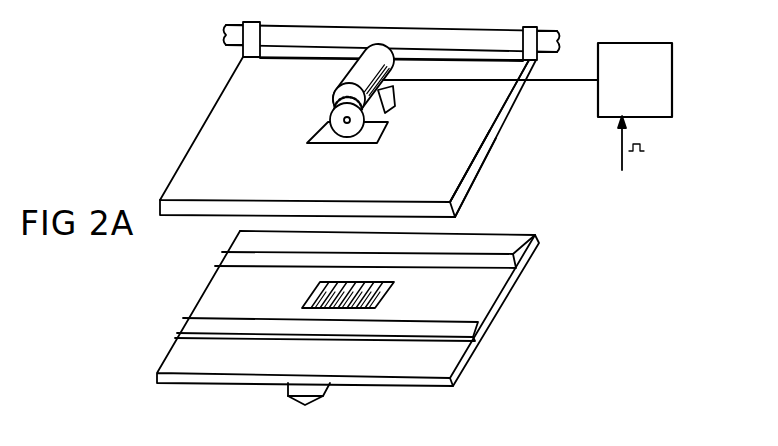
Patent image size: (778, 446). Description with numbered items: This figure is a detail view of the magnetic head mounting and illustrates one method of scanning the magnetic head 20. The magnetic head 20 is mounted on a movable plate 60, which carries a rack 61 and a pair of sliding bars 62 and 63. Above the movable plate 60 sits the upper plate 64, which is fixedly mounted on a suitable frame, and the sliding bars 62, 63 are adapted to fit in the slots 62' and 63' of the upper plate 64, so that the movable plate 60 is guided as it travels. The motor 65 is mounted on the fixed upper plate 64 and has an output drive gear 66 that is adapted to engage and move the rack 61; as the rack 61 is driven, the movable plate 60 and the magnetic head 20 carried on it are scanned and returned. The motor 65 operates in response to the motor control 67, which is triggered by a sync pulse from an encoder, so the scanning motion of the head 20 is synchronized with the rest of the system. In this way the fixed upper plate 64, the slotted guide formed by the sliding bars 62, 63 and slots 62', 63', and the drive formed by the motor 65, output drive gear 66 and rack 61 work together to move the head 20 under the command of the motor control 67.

The magnetic head 20 is at (321, 398).
The movable plate 60 is at (463, 367).
The rack 61 is at (389, 296).
The sliding bar 62 is at (326, 318).
The slot 62' is at (483, 173).
The sliding bar 63 is at (375, 263).
The slot 63' is at (505, 138).
The upper plate 64 is at (482, 61).
The motor 65 is at (381, 52).
The output drive gear 66 is at (331, 115).
The motor control 67 is at (637, 43).